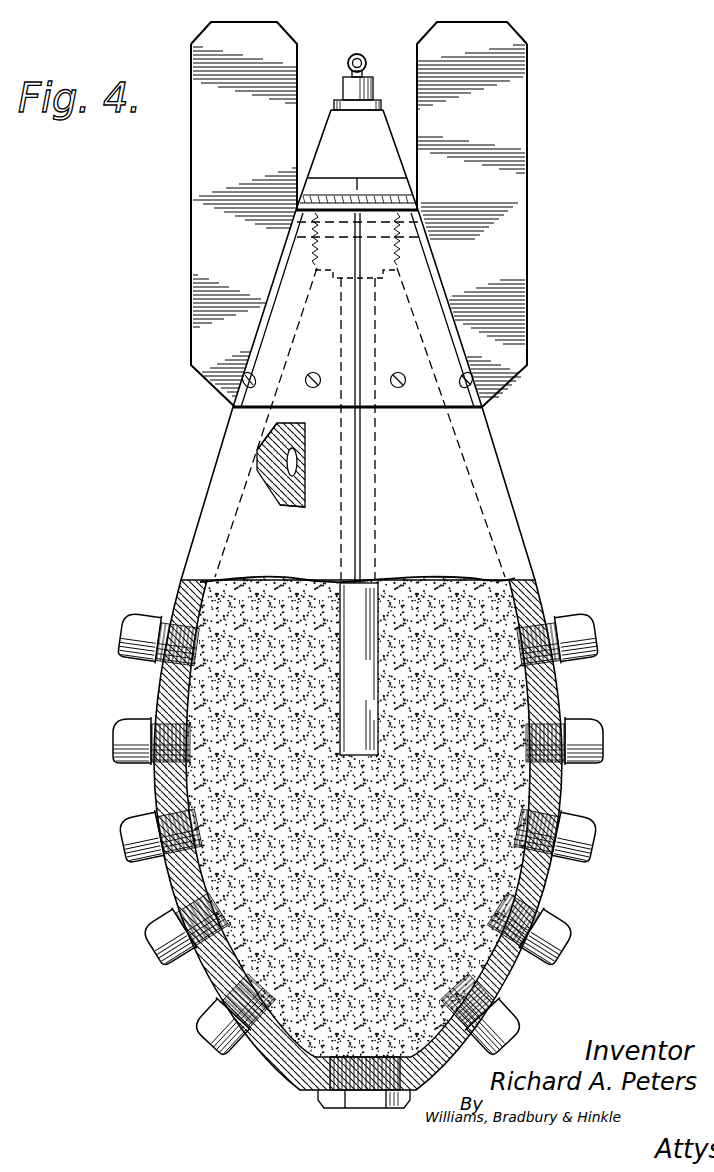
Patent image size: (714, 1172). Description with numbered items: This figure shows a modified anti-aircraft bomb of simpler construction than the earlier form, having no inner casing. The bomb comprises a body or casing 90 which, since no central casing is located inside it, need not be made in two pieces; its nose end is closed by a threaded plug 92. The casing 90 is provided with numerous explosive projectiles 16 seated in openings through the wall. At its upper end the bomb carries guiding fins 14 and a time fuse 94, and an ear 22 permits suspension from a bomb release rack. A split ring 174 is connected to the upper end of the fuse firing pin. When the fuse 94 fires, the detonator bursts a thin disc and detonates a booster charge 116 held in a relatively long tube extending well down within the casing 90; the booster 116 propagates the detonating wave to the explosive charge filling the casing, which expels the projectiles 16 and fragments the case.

The guiding fins 14 is at (210, 171).
The explosive projectile 16 is at (136, 828).
The ear 22 is at (272, 447).
The body or casing 90 is at (540, 604).
The threaded plug 92 is at (330, 1100).
The time fuse 94 is at (357, 143).
The booster charge 116 is at (359, 669).
The split ring 174 is at (364, 58).